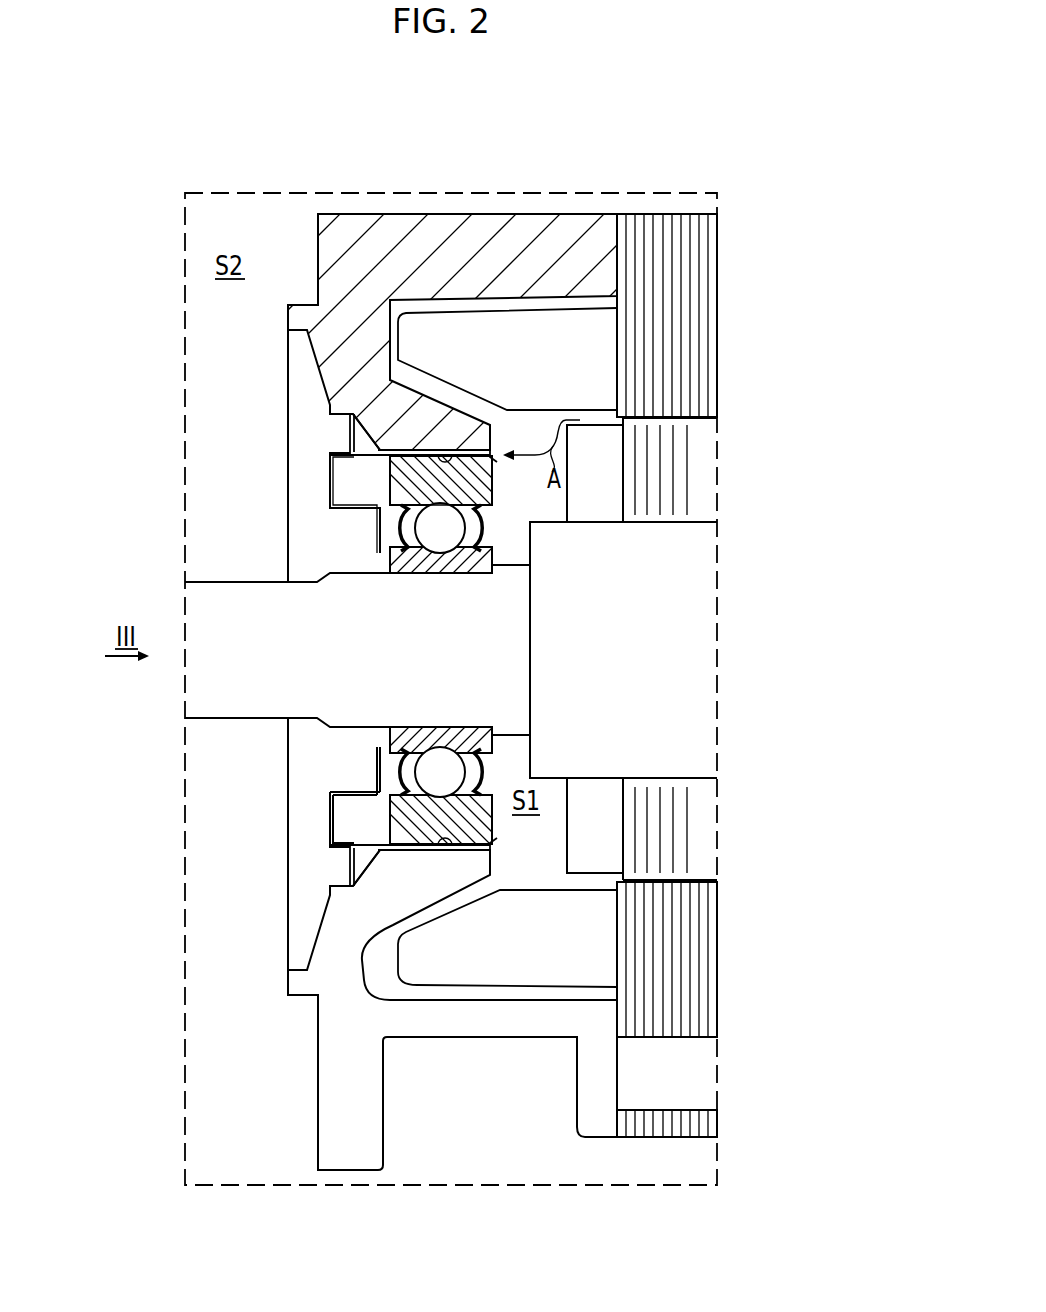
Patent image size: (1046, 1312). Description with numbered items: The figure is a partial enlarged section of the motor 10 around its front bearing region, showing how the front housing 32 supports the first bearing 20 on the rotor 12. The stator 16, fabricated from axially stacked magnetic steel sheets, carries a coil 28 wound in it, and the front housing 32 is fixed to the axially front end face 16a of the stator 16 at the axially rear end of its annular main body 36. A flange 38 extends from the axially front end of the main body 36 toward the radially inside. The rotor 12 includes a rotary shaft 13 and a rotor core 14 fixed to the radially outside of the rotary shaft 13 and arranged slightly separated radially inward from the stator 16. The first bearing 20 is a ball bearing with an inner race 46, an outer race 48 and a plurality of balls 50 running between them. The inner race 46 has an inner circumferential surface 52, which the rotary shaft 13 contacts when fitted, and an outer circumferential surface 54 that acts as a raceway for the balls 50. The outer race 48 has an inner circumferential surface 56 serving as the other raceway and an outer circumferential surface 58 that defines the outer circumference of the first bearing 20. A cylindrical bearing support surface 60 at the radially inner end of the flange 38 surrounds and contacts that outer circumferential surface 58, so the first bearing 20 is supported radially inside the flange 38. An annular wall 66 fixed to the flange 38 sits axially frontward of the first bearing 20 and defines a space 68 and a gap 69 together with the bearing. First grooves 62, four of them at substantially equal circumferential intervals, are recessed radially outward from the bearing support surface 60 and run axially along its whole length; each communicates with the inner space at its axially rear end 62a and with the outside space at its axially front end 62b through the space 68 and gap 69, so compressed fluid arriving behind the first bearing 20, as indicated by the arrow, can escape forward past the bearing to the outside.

The motor 10 is at (836, 110).
The rotor 12 is at (606, 790).
The rotary shaft 13 is at (213, 582).
The rotor core 14 is at (702, 466).
The stator 16 is at (712, 267).
The axially front end face 16a is at (617, 259).
The first bearing 20 is at (297, 639).
The coil 28 is at (561, 330).
The front housing 32 is at (371, 178).
The main body 36 is at (479, 243).
The flange 38 is at (347, 362).
The inner race 46 is at (395, 563).
The outer race 48 is at (408, 480).
The balls 50 is at (430, 527).
The inner circumferential surface 52 is at (402, 575).
The outer circumferential surface 54 is at (453, 547).
The inner circumferential surface 56 is at (440, 513).
The outer circumferential surface 58 is at (410, 415).
The bearing support surface 60 is at (393, 822).
The first grooves 62 is at (459, 450).
The axially rear end 62a is at (494, 450).
The axially front end 62b is at (380, 455).
The annular wall 66 is at (327, 802).
The space 68 is at (363, 805).
The gap 69 is at (387, 747).